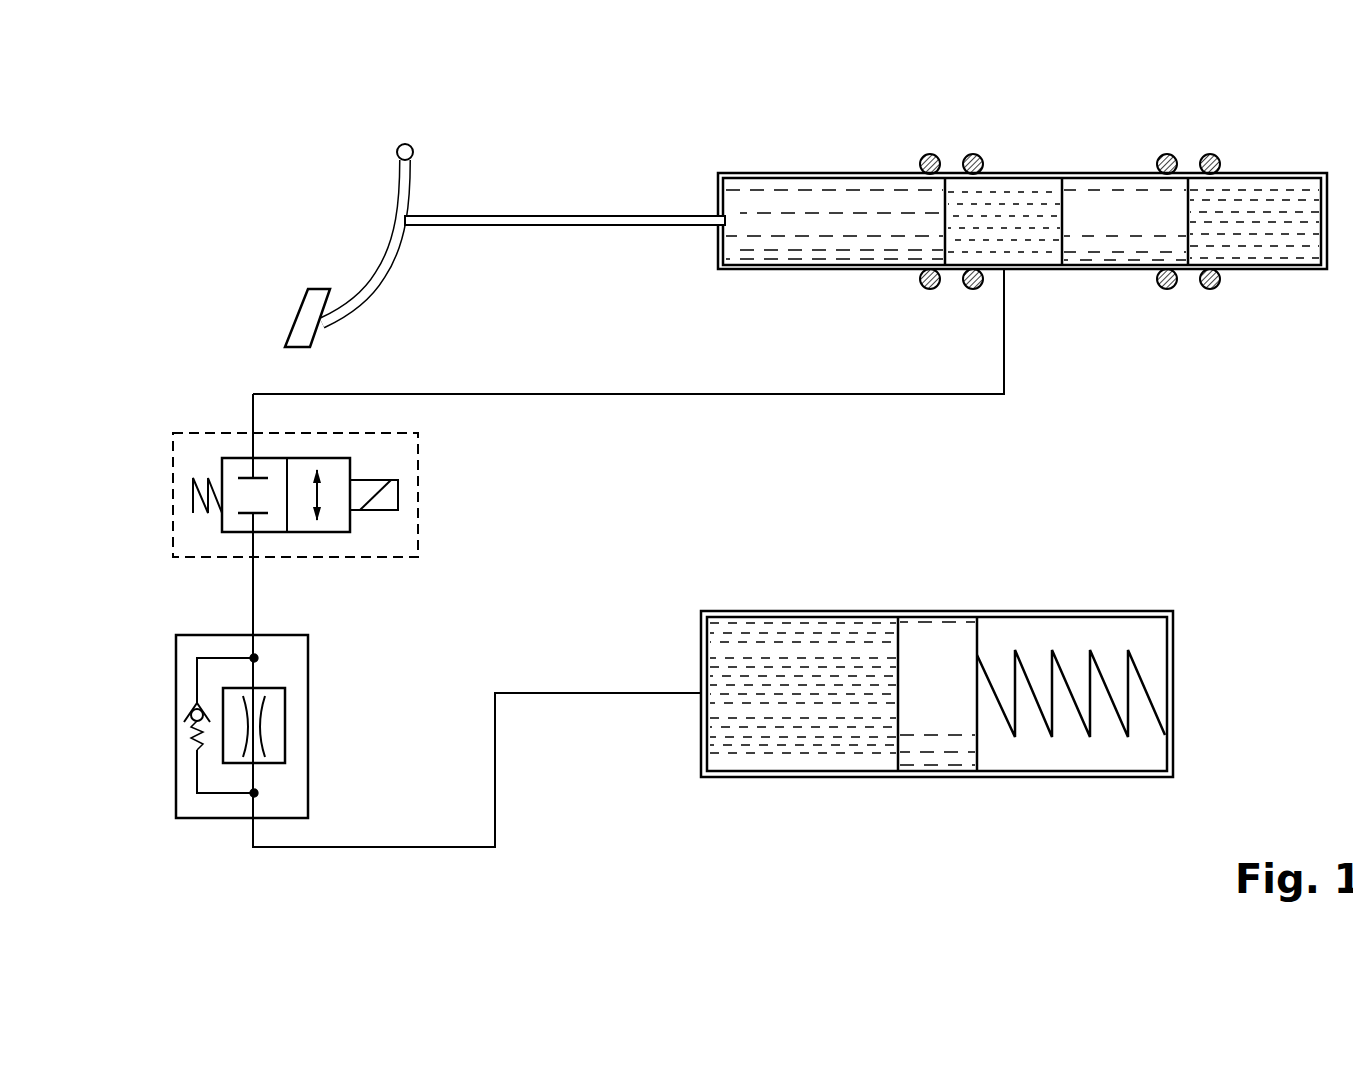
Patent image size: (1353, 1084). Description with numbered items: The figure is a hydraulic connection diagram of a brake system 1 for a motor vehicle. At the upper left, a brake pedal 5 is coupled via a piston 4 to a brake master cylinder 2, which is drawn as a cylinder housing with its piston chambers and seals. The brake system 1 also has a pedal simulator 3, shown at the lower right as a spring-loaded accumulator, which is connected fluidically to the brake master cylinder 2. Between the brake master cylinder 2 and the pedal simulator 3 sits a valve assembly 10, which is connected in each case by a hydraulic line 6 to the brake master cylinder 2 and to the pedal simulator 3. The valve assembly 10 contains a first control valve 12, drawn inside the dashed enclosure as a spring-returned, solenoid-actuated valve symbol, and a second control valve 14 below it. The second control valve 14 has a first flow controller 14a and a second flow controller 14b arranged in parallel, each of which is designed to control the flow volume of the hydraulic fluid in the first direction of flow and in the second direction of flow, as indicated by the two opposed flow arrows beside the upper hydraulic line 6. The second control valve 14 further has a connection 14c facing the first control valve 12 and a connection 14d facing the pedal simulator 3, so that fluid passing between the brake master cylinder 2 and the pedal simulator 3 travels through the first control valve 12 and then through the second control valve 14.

The brake system 1 is at (245, 165).
The brake master cylinder 2 is at (1022, 193).
The pedal simulator 3 is at (1080, 605).
The piston 4 is at (824, 183).
The brake pedal 5 is at (385, 243).
The hydraulic line 6 is at (650, 392).
The valve assembly 10 is at (245, 440).
The first control valve 12 is at (200, 412).
The second control valve 14 is at (234, 730).
The first flow controller 14a is at (188, 713).
The second flow controller 14b is at (287, 722).
The connection 14c is at (252, 634).
The connection 14d is at (253, 820).